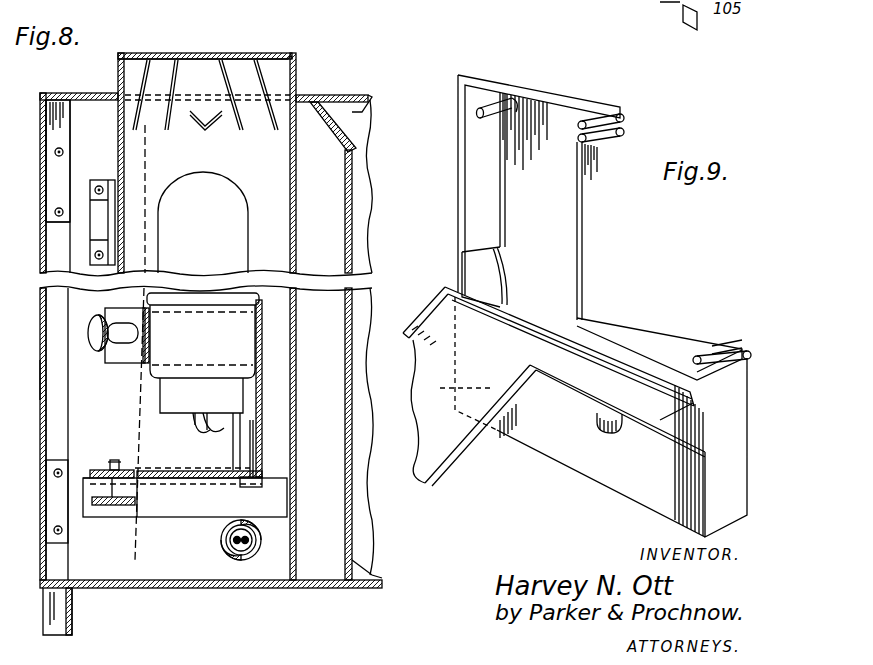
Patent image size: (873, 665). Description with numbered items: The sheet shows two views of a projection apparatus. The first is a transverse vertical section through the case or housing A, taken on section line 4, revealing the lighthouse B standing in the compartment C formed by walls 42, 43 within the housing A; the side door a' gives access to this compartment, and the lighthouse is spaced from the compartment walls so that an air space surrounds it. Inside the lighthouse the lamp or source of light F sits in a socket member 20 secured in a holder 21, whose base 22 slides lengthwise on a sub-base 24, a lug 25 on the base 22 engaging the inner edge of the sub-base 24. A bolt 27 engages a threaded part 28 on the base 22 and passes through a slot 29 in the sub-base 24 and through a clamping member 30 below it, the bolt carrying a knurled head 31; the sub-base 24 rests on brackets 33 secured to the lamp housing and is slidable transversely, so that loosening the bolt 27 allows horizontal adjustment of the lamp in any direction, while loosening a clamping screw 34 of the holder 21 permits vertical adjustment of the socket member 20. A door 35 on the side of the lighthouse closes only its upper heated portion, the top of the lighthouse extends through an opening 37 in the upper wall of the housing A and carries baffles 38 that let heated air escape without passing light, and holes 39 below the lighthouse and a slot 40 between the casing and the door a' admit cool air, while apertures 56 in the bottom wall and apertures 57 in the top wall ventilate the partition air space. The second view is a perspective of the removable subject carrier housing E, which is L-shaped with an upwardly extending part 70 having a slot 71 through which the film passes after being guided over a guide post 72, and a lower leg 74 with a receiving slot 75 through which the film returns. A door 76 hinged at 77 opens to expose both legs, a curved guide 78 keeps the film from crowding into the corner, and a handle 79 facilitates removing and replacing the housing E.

In FIG. 8, the section line 4- 4 is at (168, 90).
In FIG. 8, the opening 37 is at (100, 93).
In FIG. 8, the door 35 is at (112, 170).
In FIG. 8, the baffles or deflectors 38 is at (150, 80).
In FIG. 8, the apertures 57 is at (338, 97).
In FIG. 8, the lighthouse B is at (207, 163).
In FIG. 8, the electric lamp or source of light F is at (213, 185).
In FIG. 8, the compartment C is at (332, 211).
In FIG. 8, the door a' is at (23, 380).
In FIG. 8, the clamping screw 34 is at (92, 322).
In FIG. 8, the holder 21 is at (127, 362).
In FIG. 8, the socket member 20 is at (203, 335).
In FIG. 8, the wall 42 is at (310, 434).
In FIG. 8, the wall 43 is at (352, 388).
In FIG. 8, the base 22 is at (201, 424).
In FIG. 8, the lug or projecting portion 25 is at (258, 482).
In FIG. 8, the sub-base 24 is at (243, 485).
In FIG. 8, the brackets or projections 33 is at (270, 476).
In FIG. 8, the knurled head 31 is at (138, 500).
In FIG. 8, the threaded part 28 is at (105, 466).
In FIG. 8, the bolt or clamping screw 27 is at (113, 458).
In FIG. 8, the slot 29 is at (115, 482).
In FIG. 8, the clamping member 30 is at (92, 486).
In FIG. 8, the apertures 56 is at (380, 578).
In FIG. 8, the slot or space 40 is at (55, 614).
In FIG. 8, the holes or openings 39 is at (184, 590).
In FIG. 8, the case or housing A is at (211, 598).
In FIG. 9, the upwardly extending part 70 is at (539, 185).
In FIG. 9, the slot 71 is at (625, 119).
In FIG. 9, the guide post 72 is at (478, 110).
In FIG. 9, the lower extension or leg 74 is at (698, 333).
In FIG. 9, the receiving slot or opening 75 is at (747, 352).
In FIG. 9, the door or opening 76 is at (579, 417).
In FIG. 9, the hinge 77 is at (528, 323).
In FIG. 9, the curved guide 78 is at (484, 280).
In FIG. 9, the handle 79 is at (593, 422).
In FIG. 9, the subject carrier housing E is at (656, 266).